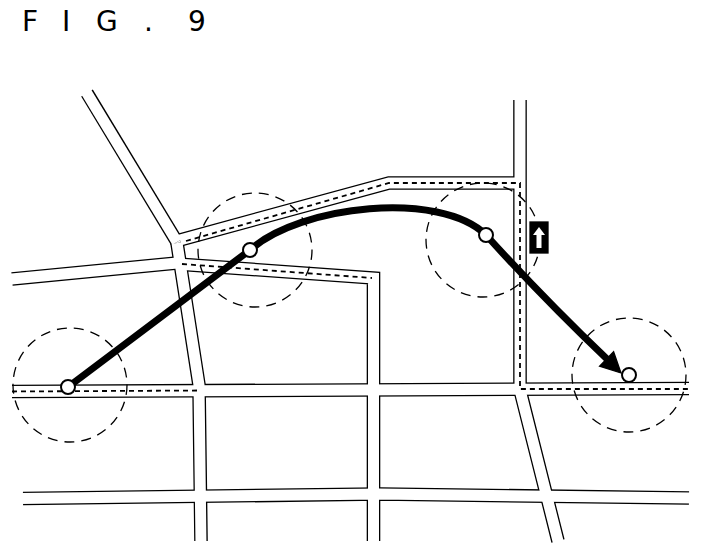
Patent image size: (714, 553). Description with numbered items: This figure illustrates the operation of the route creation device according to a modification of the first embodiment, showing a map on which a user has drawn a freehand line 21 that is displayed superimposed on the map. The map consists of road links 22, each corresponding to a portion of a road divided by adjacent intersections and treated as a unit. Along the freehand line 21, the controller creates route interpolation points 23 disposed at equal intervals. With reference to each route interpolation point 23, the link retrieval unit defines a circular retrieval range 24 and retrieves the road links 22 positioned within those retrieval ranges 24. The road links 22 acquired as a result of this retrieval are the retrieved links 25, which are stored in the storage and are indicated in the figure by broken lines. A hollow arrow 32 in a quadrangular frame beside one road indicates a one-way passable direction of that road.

The freehand line 21 is at (554, 315).
The road link 22 is at (113, 123).
The route interpolation point 23 is at (66, 379).
The retrieval range 24 is at (200, 222).
The retrieved link 25 is at (343, 181).
The hollow arrow 32 is at (549, 247).